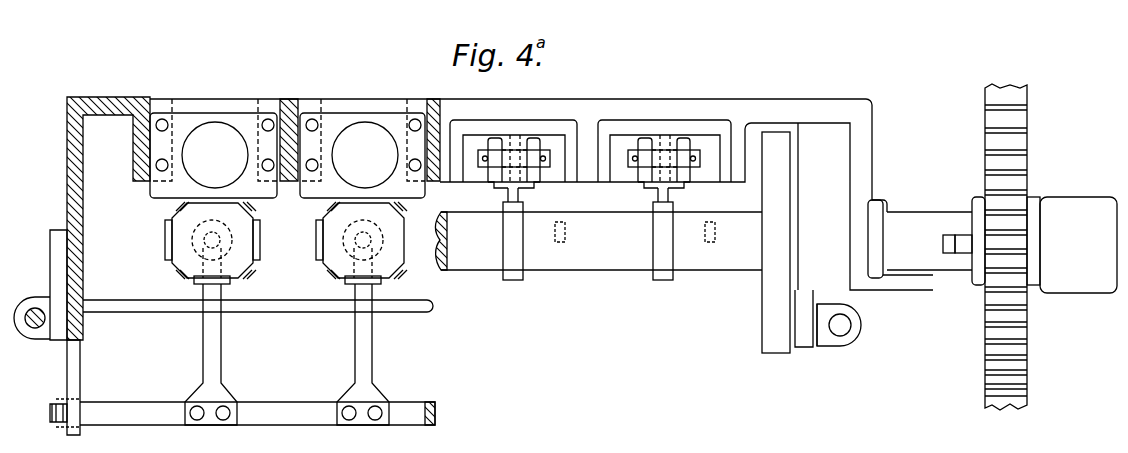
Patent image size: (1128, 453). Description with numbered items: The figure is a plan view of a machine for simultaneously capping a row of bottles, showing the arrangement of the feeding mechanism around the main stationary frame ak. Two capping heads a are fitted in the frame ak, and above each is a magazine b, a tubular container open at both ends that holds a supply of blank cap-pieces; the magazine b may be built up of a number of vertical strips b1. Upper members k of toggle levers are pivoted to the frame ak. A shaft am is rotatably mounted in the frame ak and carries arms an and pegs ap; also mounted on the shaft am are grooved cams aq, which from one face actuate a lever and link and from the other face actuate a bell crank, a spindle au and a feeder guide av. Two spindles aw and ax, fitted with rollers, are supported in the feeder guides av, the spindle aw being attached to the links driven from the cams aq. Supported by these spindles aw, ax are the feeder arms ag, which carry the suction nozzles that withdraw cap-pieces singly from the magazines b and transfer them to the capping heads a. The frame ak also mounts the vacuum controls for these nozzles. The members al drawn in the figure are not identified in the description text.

The capping head a is at (354, 173).
The magazine b is at (182, 242).
The vertical strip b1 is at (258, 241).
The upper member of toggle lever k is at (522, 192).
The feeder arm ag is at (212, 348).
The main stationary frame ak is at (78, 186).
The guide rail al is at (483, 120).
The shaft am is at (704, 241).
The arm an is at (515, 268).
The peg ap is at (566, 226).
The grooved cam aq is at (768, 305).
The spindle au is at (36, 323).
The feeder guide av is at (805, 347).
The spindle aw is at (275, 308).
The spindle ax is at (284, 408).